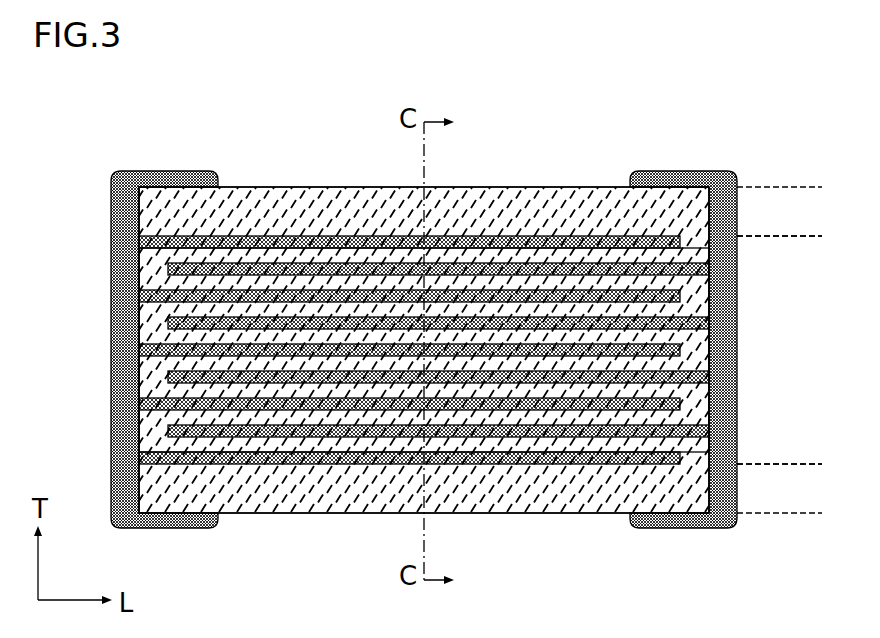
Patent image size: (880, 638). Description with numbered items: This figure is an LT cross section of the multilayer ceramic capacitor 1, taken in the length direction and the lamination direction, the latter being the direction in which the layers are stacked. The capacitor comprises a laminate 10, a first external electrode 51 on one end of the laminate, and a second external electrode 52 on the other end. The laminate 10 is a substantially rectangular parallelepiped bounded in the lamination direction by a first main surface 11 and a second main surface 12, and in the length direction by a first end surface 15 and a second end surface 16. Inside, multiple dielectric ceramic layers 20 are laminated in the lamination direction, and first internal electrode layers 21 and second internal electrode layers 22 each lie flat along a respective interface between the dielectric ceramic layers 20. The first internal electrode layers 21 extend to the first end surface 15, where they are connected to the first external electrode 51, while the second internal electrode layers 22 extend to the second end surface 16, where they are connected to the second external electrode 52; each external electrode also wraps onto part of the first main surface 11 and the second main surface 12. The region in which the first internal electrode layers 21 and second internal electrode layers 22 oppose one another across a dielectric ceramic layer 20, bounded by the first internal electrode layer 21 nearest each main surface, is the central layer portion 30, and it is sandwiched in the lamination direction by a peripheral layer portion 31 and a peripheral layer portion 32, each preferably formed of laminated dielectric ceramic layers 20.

The multilayer ceramic capacitor 1 is at (84, 125).
The laminate 10 is at (550, 181).
The first main surface 11 is at (255, 186).
The second main surface 12 is at (584, 514).
The first end surface 15 is at (138, 377).
The second end surface 16 is at (710, 403).
The dielectric ceramic layer 20 is at (380, 390).
The first internal electrode layer 21 is at (355, 345).
The second internal electrode layer 22 is at (478, 318).
The central layer portion 30 is at (822, 236).
The peripheral layer portion 31 is at (822, 187).
The peripheral layer portion 32 is at (822, 464).
The first external electrode 51 is at (122, 223).
The second external electrode 52 is at (683, 175).